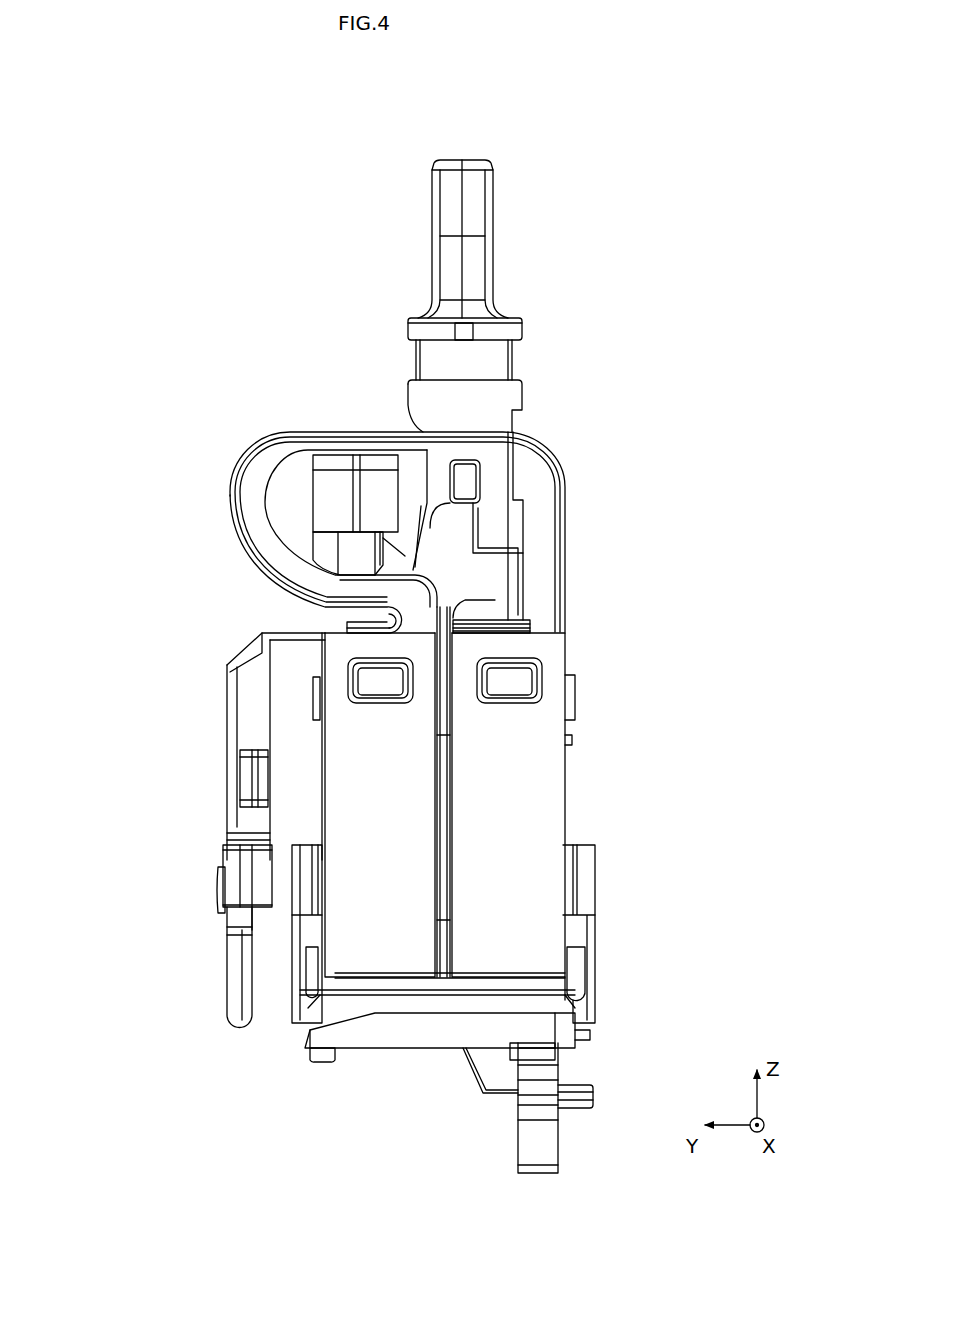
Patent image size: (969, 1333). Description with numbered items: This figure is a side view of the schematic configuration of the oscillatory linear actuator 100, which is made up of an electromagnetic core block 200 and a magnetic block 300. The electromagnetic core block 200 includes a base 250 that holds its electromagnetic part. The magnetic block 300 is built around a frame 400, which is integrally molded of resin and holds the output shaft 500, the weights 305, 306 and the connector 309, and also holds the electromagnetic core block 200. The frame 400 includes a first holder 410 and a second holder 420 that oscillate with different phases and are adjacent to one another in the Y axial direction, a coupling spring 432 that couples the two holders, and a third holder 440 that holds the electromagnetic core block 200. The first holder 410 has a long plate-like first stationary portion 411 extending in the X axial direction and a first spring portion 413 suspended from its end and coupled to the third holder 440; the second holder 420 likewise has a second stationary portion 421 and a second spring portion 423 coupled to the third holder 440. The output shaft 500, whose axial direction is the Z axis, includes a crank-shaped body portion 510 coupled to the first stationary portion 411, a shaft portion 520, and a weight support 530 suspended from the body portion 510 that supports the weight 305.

The oscillatory linear actuator 100 is at (258, 116).
The electromagnetic core block 200 is at (577, 1202).
The base 250 is at (535, 1033).
The magnetic block 300 is at (298, 320).
The weight 305 is at (233, 965).
The weight 306 is at (338, 491).
The connector 309 is at (340, 552).
The frame 400 is at (640, 717).
The first holder 410 is at (302, 770).
The first stationary portion 411 is at (313, 628).
The first spring portion 413 is at (372, 727).
The second holder 420 is at (602, 797).
The second stationary portion 421 is at (540, 637).
The second spring portion 423 is at (536, 770).
The coupling spring 432 is at (560, 490).
The third holder 440 is at (572, 925).
The output shaft 500 is at (205, 667).
The body portion 510 is at (296, 641).
The shaft portion 520 is at (452, 193).
The weight support 530 is at (245, 691).